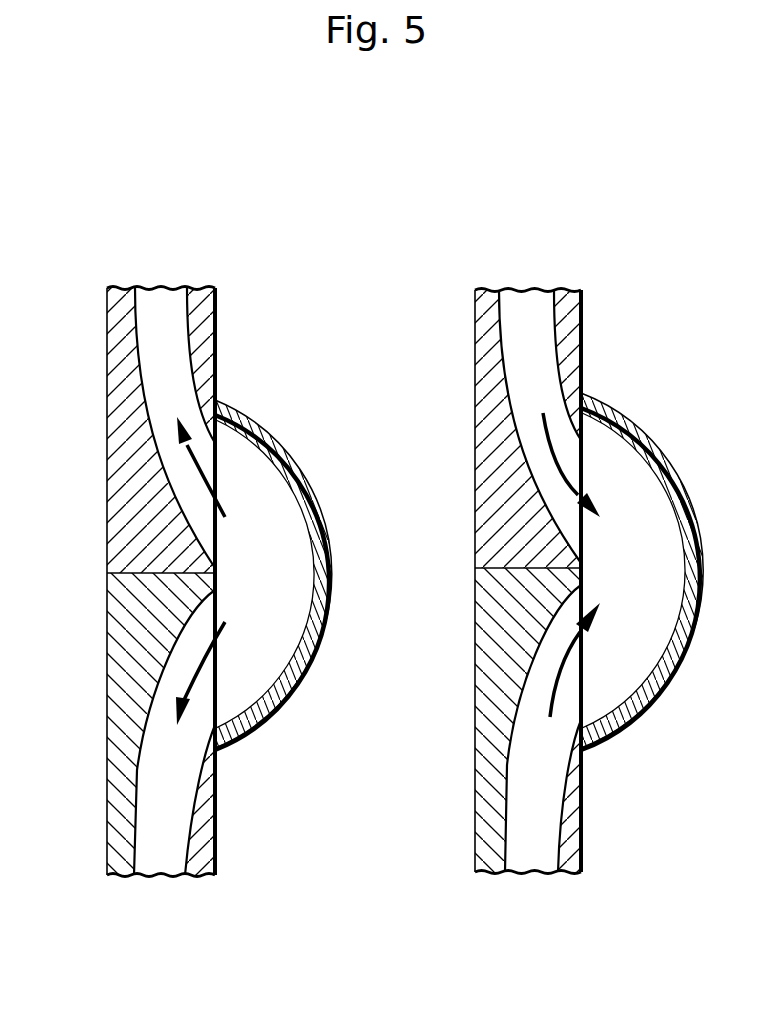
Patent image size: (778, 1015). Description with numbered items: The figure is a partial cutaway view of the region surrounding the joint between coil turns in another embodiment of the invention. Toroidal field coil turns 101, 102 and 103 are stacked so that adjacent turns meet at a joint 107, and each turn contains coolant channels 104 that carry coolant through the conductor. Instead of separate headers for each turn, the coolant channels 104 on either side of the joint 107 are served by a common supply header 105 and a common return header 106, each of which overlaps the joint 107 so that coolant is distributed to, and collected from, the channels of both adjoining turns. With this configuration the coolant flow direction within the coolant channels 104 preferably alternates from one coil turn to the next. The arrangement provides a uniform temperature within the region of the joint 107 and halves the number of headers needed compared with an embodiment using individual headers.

The TF coil turn 101 is at (217, 296).
The TF coil turn 102 is at (218, 806).
The TF coil turn 103 is at (583, 862).
The coolant channel 104 is at (122, 332).
The common supply header 105 is at (248, 420).
The common return header 106 is at (650, 425).
The joint 107 is at (108, 573).